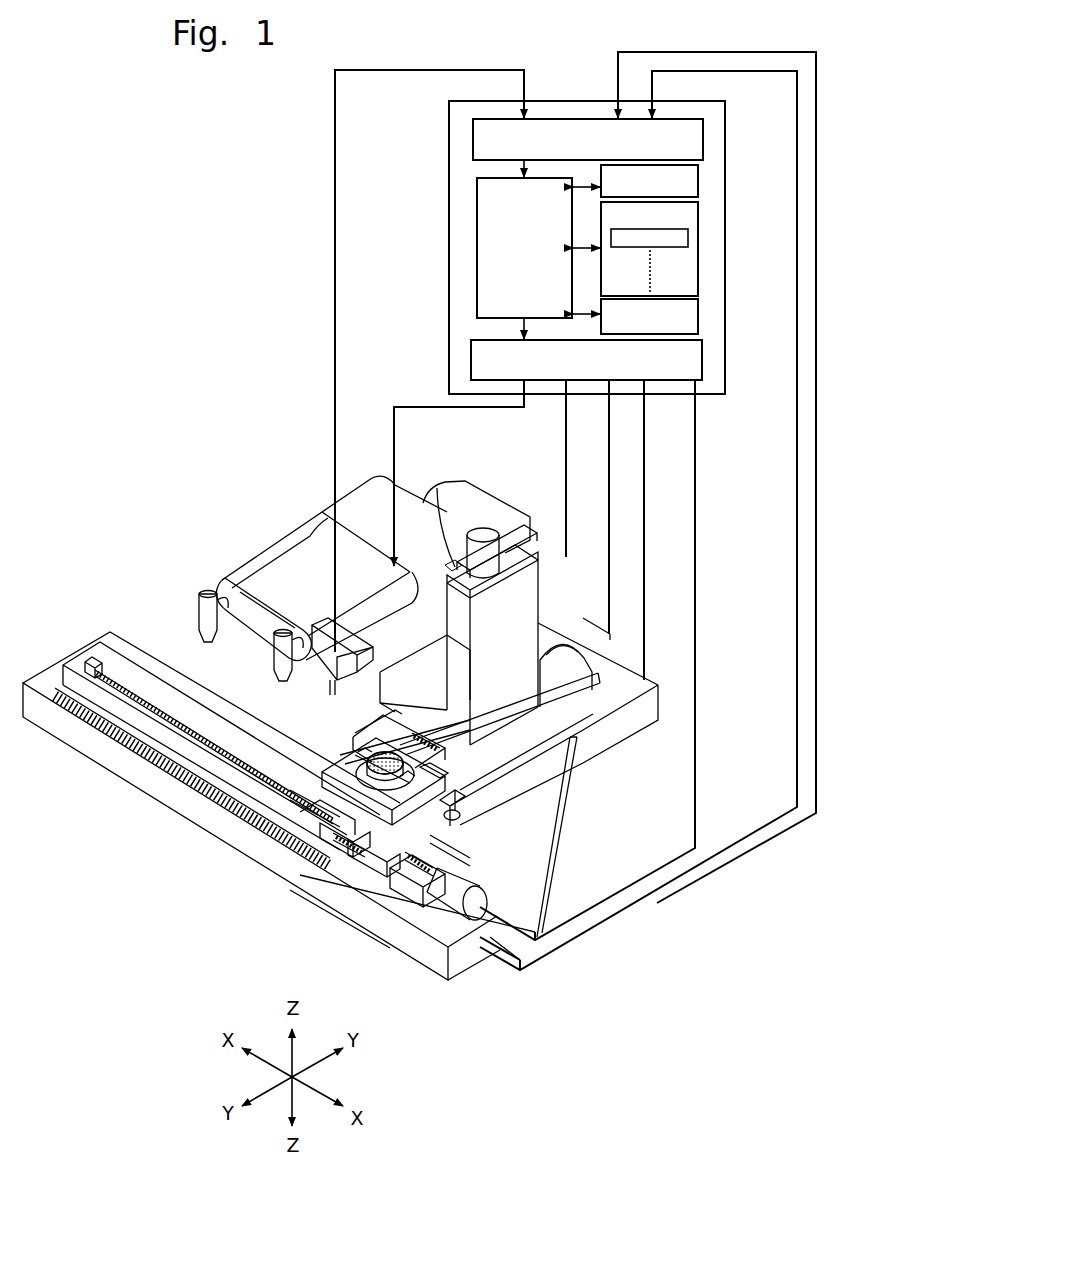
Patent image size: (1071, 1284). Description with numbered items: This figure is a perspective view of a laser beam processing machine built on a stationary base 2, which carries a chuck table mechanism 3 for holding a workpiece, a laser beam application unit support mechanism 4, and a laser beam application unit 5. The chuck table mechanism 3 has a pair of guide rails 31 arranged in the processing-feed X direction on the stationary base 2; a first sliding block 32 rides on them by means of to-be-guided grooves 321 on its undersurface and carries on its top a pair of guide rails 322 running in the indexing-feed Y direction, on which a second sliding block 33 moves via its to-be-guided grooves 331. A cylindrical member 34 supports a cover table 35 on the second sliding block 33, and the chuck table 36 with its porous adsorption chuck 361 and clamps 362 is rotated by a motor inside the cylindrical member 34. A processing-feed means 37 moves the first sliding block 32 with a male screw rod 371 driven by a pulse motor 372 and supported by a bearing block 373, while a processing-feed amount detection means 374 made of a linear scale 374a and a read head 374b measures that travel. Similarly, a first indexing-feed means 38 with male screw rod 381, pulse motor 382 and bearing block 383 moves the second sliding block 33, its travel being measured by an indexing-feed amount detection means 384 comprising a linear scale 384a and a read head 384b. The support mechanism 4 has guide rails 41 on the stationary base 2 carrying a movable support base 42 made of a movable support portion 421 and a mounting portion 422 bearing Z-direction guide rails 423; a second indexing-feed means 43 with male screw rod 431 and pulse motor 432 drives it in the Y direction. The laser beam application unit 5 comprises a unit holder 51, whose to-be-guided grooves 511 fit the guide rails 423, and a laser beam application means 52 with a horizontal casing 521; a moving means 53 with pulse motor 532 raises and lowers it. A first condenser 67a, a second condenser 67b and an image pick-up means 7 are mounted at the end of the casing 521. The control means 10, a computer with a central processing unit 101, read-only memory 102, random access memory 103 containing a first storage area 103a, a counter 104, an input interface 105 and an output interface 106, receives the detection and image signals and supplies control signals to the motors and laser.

The control means 10 is at (568, 95).
The central processing unit (CPU) 101 is at (477, 214).
The read-only memory (ROM) 102 is at (698, 194).
The random access memory (RAM) 103 is at (688, 249).
The first storage area 103a is at (649, 238).
The counter 104 is at (698, 306).
The input interface 105 is at (473, 140).
The output interface 106 is at (471, 358).
The stationary base 2 is at (596, 837).
The chuck table mechanism 3 is at (412, 882).
The guide rails 31 is at (67, 662).
The first sliding block 32 is at (380, 907).
The to-be-guided grooves 321 is at (540, 890).
The guide rails 322 is at (328, 878).
The second sliding block 33 is at (467, 848).
The to-be-guided grooves 331 is at (325, 832).
The cylindrical member 34 is at (398, 910).
The cover table 35 is at (433, 787).
The chuck table 36 is at (422, 763).
The adsorption chuck 361 is at (425, 770).
The clamps 362 is at (347, 752).
The processing-feed means 37 is at (415, 912).
The male screw rod 371 is at (232, 805).
The pulse motor 372 is at (525, 963).
The bearing block 373 is at (88, 660).
The processing-feed amount detection means 374 is at (346, 912).
The linear scale 374a is at (217, 790).
The read head 374b is at (368, 880).
The first indexing-feed means 38 is at (415, 909).
The male screw rod 381 is at (313, 854).
The pulse motor 382 is at (455, 795).
The bearing block 383 is at (340, 888).
The indexing-feed amount detection means 384 is at (523, 919).
The linear scale 384a is at (476, 917).
The read head 384b is at (535, 858).
The laser beam application unit support mechanism 4 is at (515, 675).
The guide rails 41 is at (378, 722).
The movable support base 42 is at (495, 635).
The movable support portion 421 is at (392, 670).
The mounting portion 422 is at (540, 584).
The guide rails 423 is at (394, 568).
The second indexing-feed means 43 is at (608, 638).
The male screw rod 431 is at (420, 710).
The pulse motor 432 is at (589, 660).
The laser beam application unit 5 is at (365, 566).
The unit holder 51 is at (455, 512).
The to-be-guided grooves 511 is at (447, 571).
The laser beam application means 52 is at (321, 568).
The casing 521 is at (248, 572).
The moving means 53 is at (497, 498).
The pulse motor 532 is at (489, 533).
The image pick-up means 7 is at (297, 689).
The first condenser 67a is at (274, 650).
The second condenser 67b is at (199, 610).